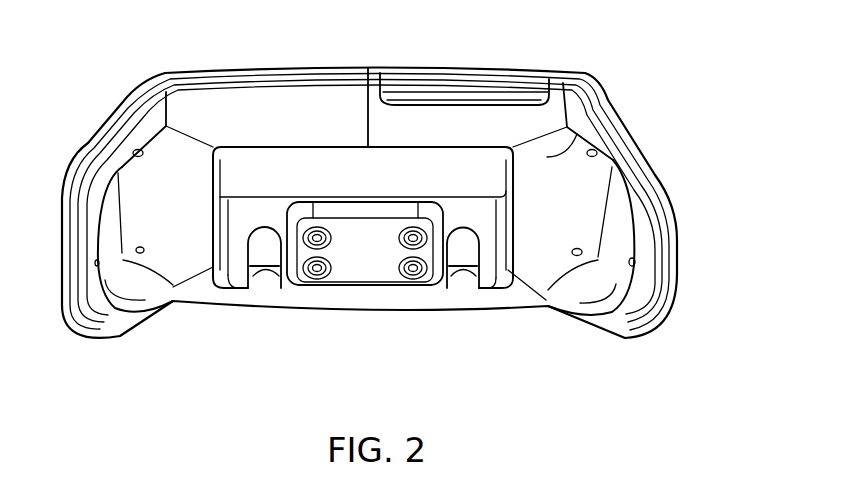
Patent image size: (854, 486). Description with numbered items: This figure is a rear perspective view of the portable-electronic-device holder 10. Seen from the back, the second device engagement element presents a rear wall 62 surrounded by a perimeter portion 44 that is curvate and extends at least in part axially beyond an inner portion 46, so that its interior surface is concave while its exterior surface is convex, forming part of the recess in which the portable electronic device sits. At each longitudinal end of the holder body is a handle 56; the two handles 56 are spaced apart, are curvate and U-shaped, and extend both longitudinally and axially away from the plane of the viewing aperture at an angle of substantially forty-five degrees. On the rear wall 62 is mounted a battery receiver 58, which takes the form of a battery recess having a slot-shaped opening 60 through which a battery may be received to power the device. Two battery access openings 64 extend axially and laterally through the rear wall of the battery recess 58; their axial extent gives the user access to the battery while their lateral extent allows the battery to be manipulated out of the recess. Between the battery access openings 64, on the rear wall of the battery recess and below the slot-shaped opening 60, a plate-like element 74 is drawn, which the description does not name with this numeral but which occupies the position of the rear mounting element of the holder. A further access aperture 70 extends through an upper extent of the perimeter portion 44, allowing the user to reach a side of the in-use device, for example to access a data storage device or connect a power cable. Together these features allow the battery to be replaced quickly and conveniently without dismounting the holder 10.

The portable-electronic-device holder 10 is at (706, 241).
The perimeter portion 44 is at (290, 70).
The inner portion 46 is at (520, 297).
The handle 56 is at (100, 338).
The battery receiver 58 is at (240, 277).
The slot-shaped opening 60 is at (260, 170).
The rear wall 62 is at (597, 98).
The battery access opening 64 is at (267, 268).
The further access aperture 70 is at (443, 80).
The mounting plate 74 is at (363, 277).